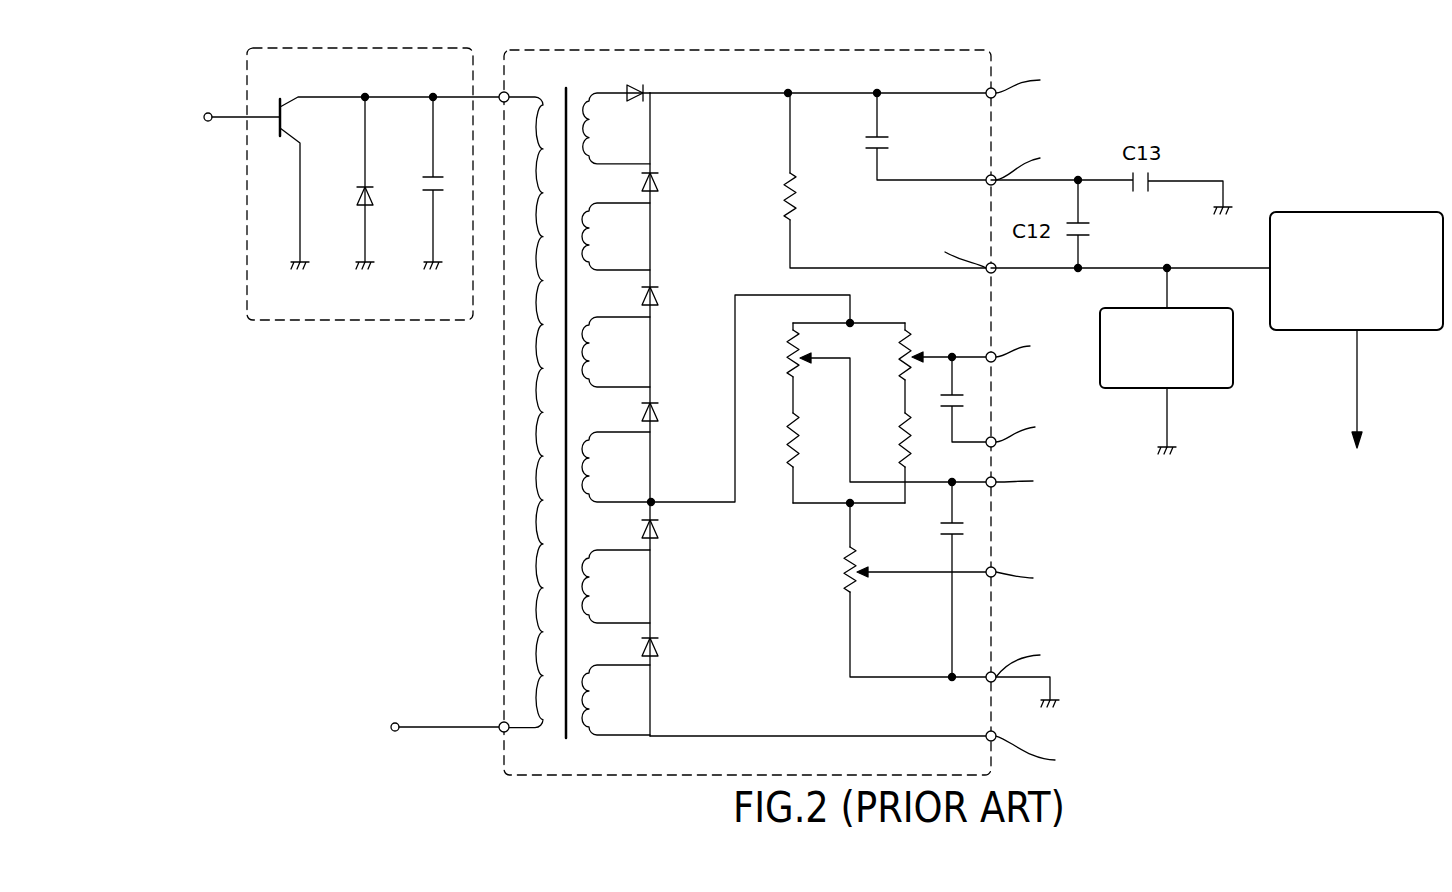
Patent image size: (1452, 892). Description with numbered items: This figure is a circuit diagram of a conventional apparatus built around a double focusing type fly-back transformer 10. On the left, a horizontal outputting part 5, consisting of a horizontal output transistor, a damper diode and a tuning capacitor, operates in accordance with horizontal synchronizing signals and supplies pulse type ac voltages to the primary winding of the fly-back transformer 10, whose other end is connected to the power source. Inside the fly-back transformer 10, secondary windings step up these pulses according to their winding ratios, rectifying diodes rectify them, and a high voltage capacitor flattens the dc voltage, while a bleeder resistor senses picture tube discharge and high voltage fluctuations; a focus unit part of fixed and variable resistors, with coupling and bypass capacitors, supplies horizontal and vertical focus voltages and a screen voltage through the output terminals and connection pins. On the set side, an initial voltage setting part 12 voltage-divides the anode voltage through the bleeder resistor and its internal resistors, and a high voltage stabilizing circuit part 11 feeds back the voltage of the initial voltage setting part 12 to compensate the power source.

The horizontal outputting part 5 is at (423, 48).
The double focusing type fly-back transformer 10 is at (938, 50).
The high voltage stabilizing circuit part 11 is at (1350, 212).
The initial voltage setting part 12 is at (1225, 388).